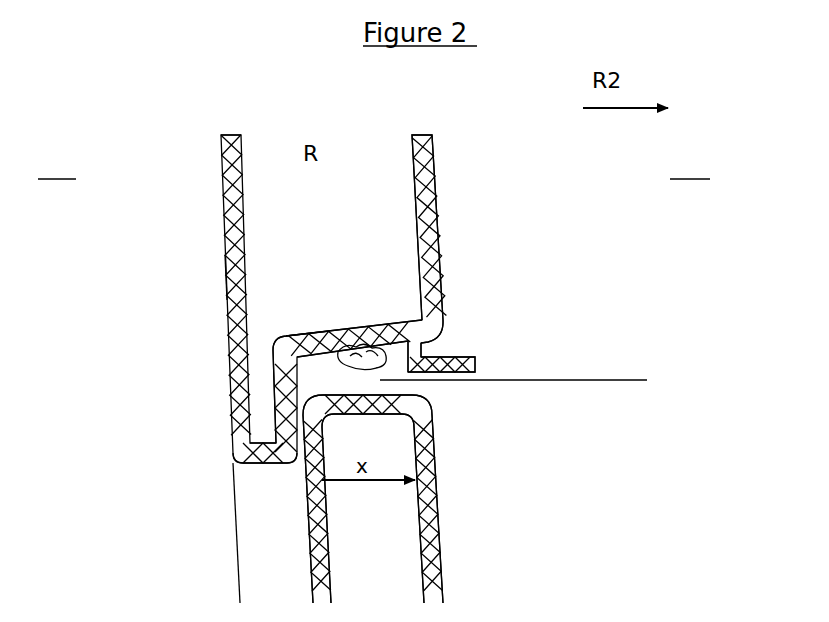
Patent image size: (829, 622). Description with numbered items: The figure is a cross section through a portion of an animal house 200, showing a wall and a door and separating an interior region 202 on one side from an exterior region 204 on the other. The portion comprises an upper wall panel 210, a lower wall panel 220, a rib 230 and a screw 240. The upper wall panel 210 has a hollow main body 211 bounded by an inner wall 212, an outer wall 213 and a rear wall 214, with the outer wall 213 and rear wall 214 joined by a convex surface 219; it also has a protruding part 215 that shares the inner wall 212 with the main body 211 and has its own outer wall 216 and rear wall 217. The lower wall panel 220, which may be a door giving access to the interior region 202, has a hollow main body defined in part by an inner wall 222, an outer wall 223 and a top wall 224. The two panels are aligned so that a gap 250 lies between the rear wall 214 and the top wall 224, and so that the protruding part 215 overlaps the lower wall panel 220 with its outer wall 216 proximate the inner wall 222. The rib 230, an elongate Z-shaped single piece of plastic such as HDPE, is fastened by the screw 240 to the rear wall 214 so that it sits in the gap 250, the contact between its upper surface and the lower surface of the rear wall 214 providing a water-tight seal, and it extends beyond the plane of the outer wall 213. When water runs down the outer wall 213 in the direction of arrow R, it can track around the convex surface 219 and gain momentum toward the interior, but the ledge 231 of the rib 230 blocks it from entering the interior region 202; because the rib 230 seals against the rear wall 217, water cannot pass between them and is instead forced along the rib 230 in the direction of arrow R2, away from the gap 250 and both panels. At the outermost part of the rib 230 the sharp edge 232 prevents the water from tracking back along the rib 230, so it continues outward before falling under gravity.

The animal house 200 is at (693, 72).
The interior region 202 is at (59, 167).
The exterior region 204 is at (691, 167).
The upper wall panel 210 is at (273, 235).
The hollow main body 211 is at (267, 165).
The inner wall 212 is at (240, 277).
The outer wall 213 is at (433, 256).
The rear wall 214 is at (278, 350).
The protruding part 215 is at (263, 392).
The outer wall 216 is at (278, 418).
The rear wall 217 is at (267, 458).
The convex surface 219 is at (448, 315).
The lower wall panel 220 is at (353, 552).
The inner wall 222 is at (313, 508).
The outer wall 223 is at (432, 465).
The top wall 224 is at (380, 408).
The rib 230 is at (420, 342).
The ledge 231 is at (420, 355).
The sharp edge 232 is at (477, 366).
The screw 240 is at (355, 340).
The gap 250 is at (542, 382).